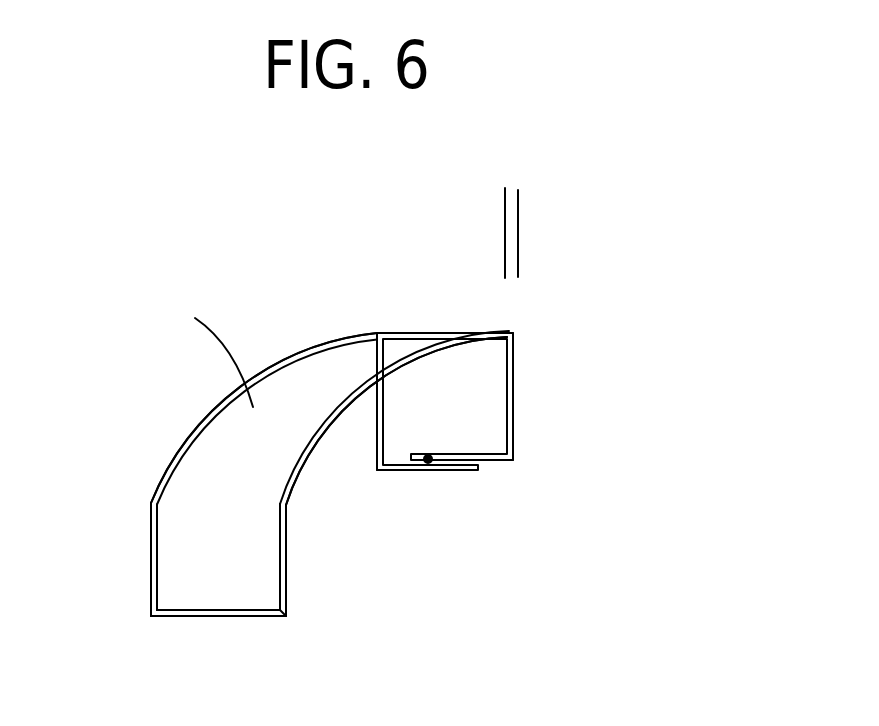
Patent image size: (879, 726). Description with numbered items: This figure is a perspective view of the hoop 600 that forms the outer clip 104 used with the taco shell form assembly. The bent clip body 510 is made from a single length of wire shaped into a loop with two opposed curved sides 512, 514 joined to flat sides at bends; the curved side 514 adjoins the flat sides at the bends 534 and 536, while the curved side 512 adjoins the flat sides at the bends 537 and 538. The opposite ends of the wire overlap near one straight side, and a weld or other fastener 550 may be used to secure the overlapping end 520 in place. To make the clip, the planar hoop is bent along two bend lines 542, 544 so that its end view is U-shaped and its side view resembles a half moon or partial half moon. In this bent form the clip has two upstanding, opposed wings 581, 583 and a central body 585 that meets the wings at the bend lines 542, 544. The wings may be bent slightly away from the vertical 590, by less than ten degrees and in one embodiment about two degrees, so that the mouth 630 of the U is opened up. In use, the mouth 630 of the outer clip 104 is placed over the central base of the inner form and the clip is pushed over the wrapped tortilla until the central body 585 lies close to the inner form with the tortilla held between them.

The outer clip 104 is at (553, 521).
The curved segment 510 is at (380, 473).
The curved side 512 is at (312, 436).
The curved side 514 is at (183, 442).
The end of the wire 520 is at (442, 452).
The bend 534 is at (147, 506).
The bend 536 is at (376, 330).
The bend 537 is at (277, 503).
The bend 538 is at (513, 333).
The bend line 542 is at (243, 642).
The bend line 544 is at (105, 647).
The weld or fastener 550 is at (428, 459).
The wing 581 is at (283, 585).
The wing 583 is at (152, 565).
The central body 585 is at (178, 607).
The strap 590 is at (502, 250).
The hoop 600 is at (620, 227).
The outer clip mouth 630 is at (199, 339).